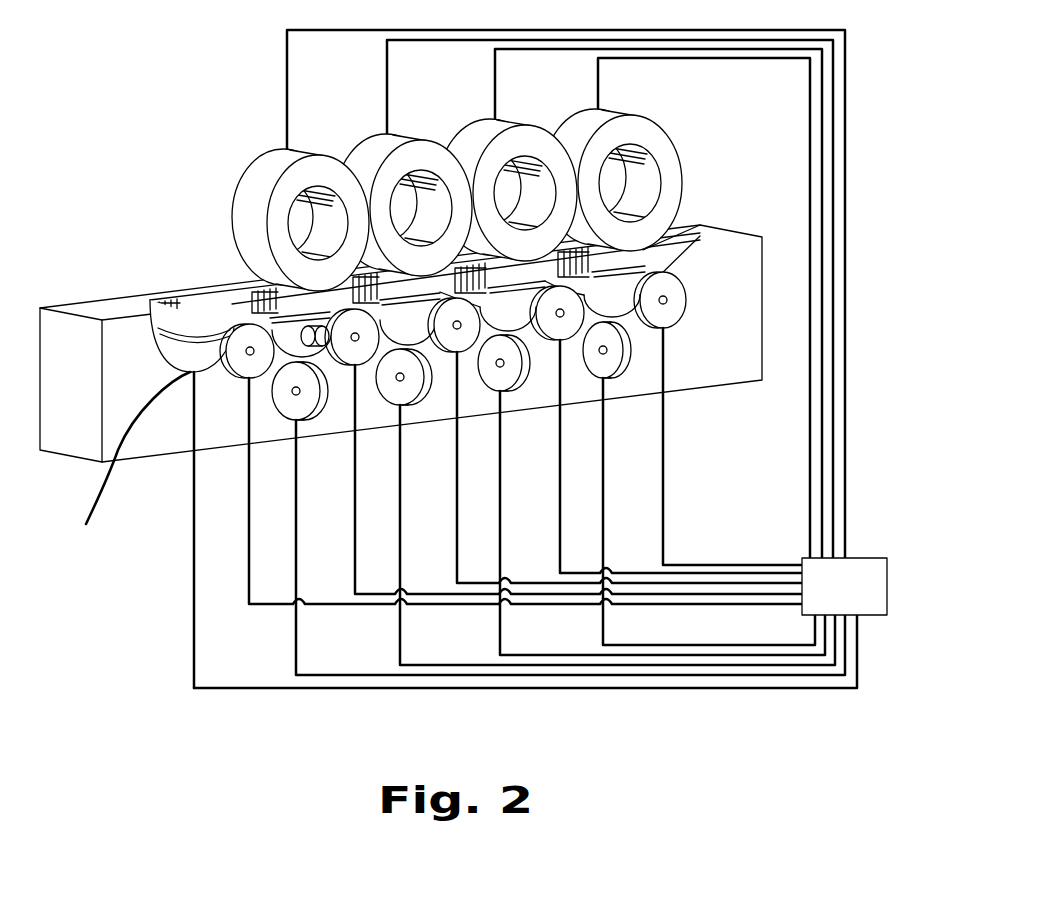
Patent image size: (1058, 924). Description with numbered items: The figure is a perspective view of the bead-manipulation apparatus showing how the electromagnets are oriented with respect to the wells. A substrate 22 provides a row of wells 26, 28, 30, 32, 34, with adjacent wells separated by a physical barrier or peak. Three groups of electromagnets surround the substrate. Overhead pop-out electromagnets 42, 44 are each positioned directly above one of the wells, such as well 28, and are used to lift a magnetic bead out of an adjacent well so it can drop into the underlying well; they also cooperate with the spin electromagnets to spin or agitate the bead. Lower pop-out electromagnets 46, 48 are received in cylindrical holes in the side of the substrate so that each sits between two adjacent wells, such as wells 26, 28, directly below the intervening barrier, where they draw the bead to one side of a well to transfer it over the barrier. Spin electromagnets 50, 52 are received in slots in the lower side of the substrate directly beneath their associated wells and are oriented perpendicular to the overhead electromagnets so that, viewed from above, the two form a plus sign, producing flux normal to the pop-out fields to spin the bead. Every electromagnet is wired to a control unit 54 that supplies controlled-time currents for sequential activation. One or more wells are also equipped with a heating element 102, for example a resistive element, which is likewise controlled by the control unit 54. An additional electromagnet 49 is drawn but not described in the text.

The substrate 22 is at (188, 287).
The well 26 is at (193, 376).
The well 28 is at (280, 358).
The well 30 is at (462, 355).
The well 32 is at (540, 342).
The well 34 is at (661, 332).
The overhead pop-out electromagnet 42 is at (254, 165).
The overhead pop-out electromagnet 44 is at (398, 140).
The lower pop-out electromagnet 46 is at (243, 380).
The lower pop-out electromagnet 48 is at (362, 368).
The roller 49 is at (505, 394).
The spin electromagnet 50 is at (309, 417).
The spin electromagnet 52 is at (418, 403).
The control unit 54 is at (868, 616).
The heating element 102 is at (86, 524).